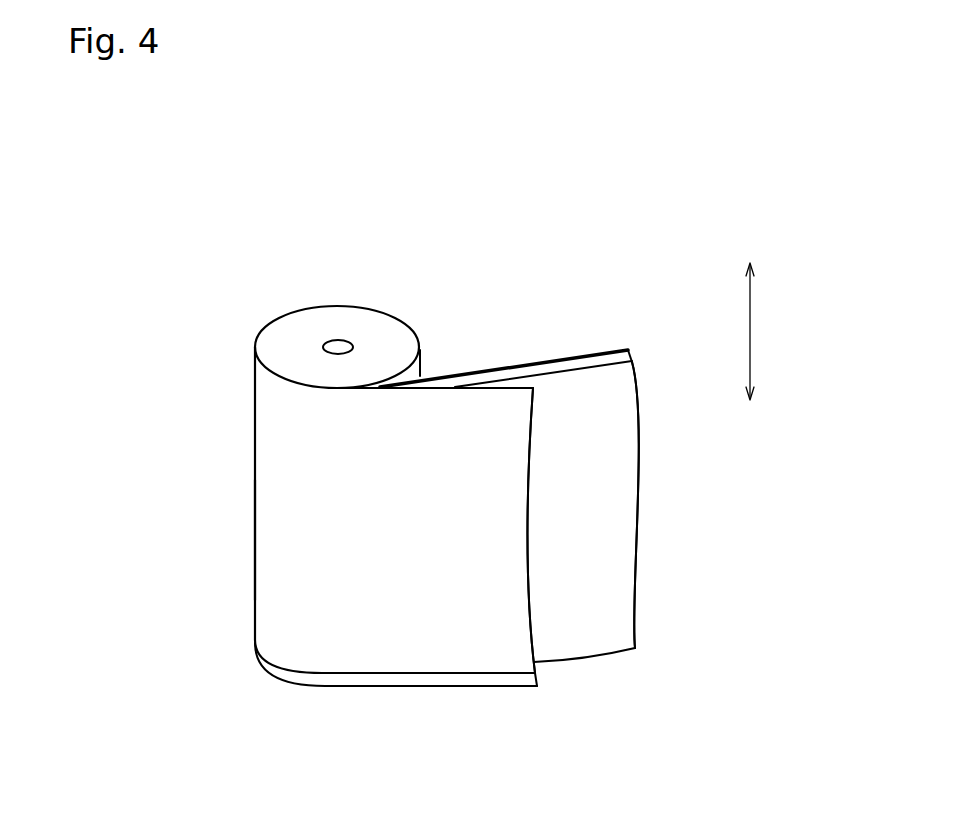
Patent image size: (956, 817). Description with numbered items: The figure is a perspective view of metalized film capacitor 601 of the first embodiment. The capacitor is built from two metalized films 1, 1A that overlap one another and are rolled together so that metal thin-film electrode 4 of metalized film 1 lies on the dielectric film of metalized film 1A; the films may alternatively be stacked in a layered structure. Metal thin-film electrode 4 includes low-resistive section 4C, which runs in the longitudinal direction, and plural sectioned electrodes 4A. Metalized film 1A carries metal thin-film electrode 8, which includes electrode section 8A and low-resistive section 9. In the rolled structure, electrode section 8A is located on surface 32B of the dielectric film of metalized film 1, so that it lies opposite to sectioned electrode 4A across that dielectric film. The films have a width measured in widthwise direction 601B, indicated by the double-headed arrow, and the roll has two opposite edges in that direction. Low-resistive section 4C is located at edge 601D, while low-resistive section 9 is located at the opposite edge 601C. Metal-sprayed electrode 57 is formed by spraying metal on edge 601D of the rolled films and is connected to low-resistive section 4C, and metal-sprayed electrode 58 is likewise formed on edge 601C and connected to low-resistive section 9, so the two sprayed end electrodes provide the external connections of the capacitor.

The metalized film 1 is at (615, 502).
The metalized film 1A is at (418, 655).
The metal thin-film electrode 4 is at (612, 560).
The sectioned electrode 4A is at (620, 620).
The low-resistive section 4C is at (565, 357).
The metal thin-film electrode 8 is at (283, 483).
The electrode section 8A is at (273, 538).
The low-resistive section 9 is at (492, 682).
The surface 32B is at (602, 350).
The metal-sprayed electrode 57 is at (287, 342).
The metal-sprayed electrode 58 is at (267, 672).
The metalized film capacitor 601 is at (605, 292).
The widthwise direction 601B is at (750, 307).
The edge 601C is at (333, 687).
The edge 601D is at (392, 342).